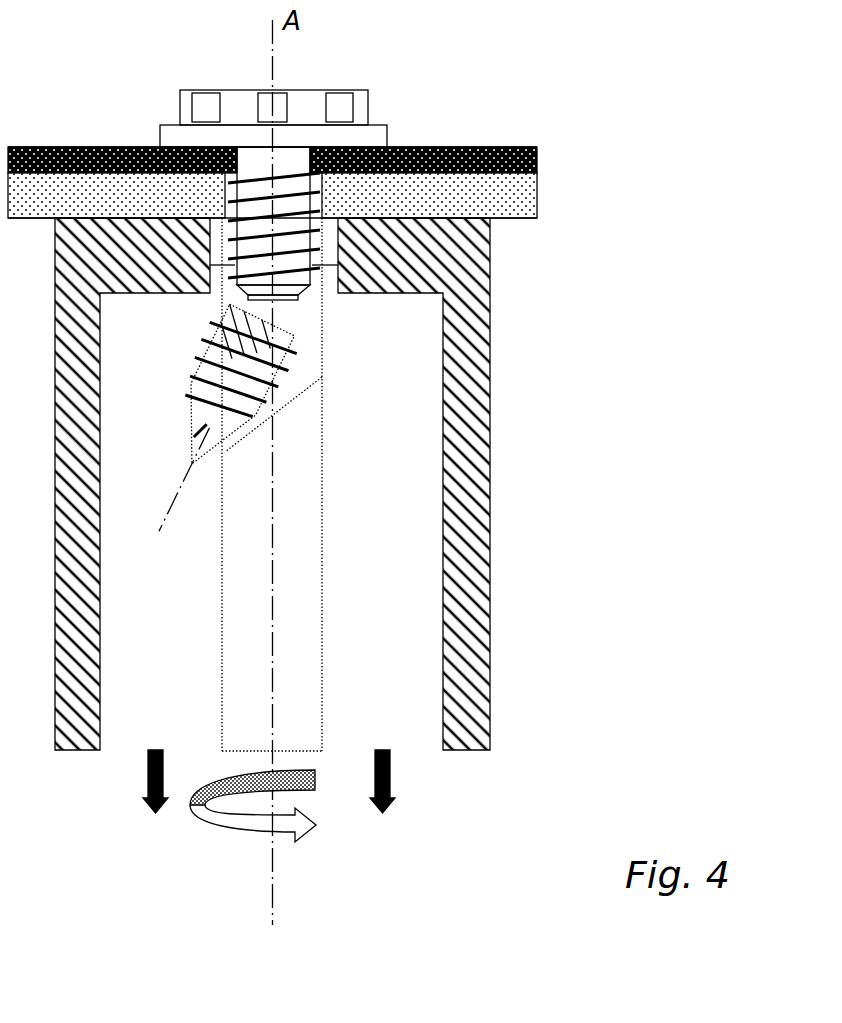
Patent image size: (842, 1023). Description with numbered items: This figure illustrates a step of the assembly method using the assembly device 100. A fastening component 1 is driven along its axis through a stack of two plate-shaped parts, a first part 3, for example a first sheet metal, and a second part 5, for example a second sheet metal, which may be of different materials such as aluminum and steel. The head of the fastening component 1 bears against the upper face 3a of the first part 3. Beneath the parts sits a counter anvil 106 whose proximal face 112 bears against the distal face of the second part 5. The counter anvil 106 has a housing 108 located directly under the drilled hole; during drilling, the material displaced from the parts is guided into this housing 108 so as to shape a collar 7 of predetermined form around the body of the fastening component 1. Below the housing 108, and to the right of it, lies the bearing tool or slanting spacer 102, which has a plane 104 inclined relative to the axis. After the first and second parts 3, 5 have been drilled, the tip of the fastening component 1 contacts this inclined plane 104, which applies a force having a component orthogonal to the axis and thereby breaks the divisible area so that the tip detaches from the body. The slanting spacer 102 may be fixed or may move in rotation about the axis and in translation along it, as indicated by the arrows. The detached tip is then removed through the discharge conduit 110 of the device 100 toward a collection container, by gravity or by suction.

The fastening component 1 is at (252, 288).
The first part 3 is at (538, 160).
The upper face of the first part 3a is at (422, 147).
The second part 5 is at (517, 198).
The collar 7 is at (222, 268).
The assembly device 100 is at (645, 175).
The slanting spacer 102 is at (323, 490).
The inclined plane 104 is at (304, 386).
The counter anvil 106 is at (490, 385).
The housing 108 is at (323, 270).
The discharge conduit 110 is at (178, 663).
The proximal face 112 is at (472, 216).